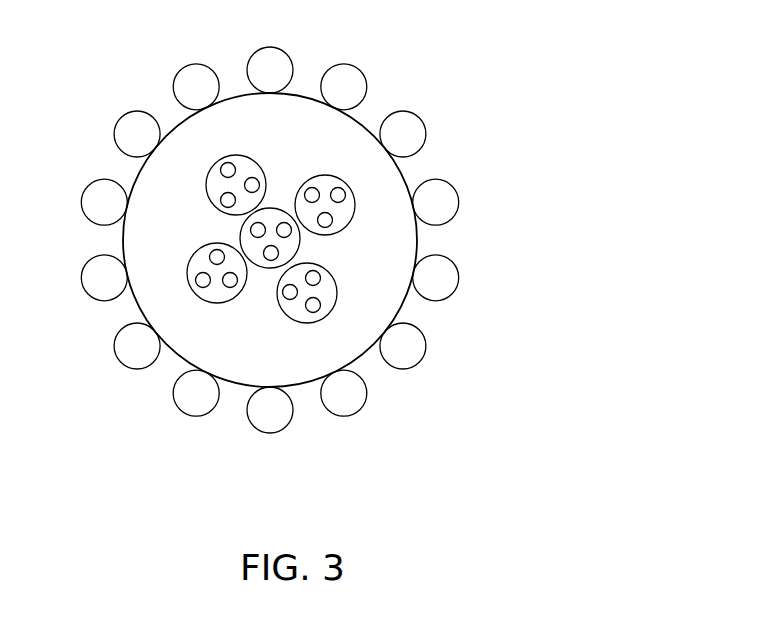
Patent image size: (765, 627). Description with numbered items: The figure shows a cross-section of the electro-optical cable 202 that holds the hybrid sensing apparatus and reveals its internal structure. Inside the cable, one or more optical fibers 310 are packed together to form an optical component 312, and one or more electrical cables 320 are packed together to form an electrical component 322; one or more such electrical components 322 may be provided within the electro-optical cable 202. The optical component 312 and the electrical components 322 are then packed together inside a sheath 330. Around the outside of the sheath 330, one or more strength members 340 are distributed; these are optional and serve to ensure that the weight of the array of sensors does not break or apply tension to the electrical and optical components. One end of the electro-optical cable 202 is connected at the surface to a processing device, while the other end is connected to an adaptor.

The electro-optical cable 202 is at (630, 39).
The optical fiber 310 is at (312, 188).
The optical component 312 is at (393, 133).
The electrical cable 320 is at (316, 312).
The electrical component 322 is at (261, 349).
The sheath 330 is at (418, 233).
The strength member 340 is at (352, 411).